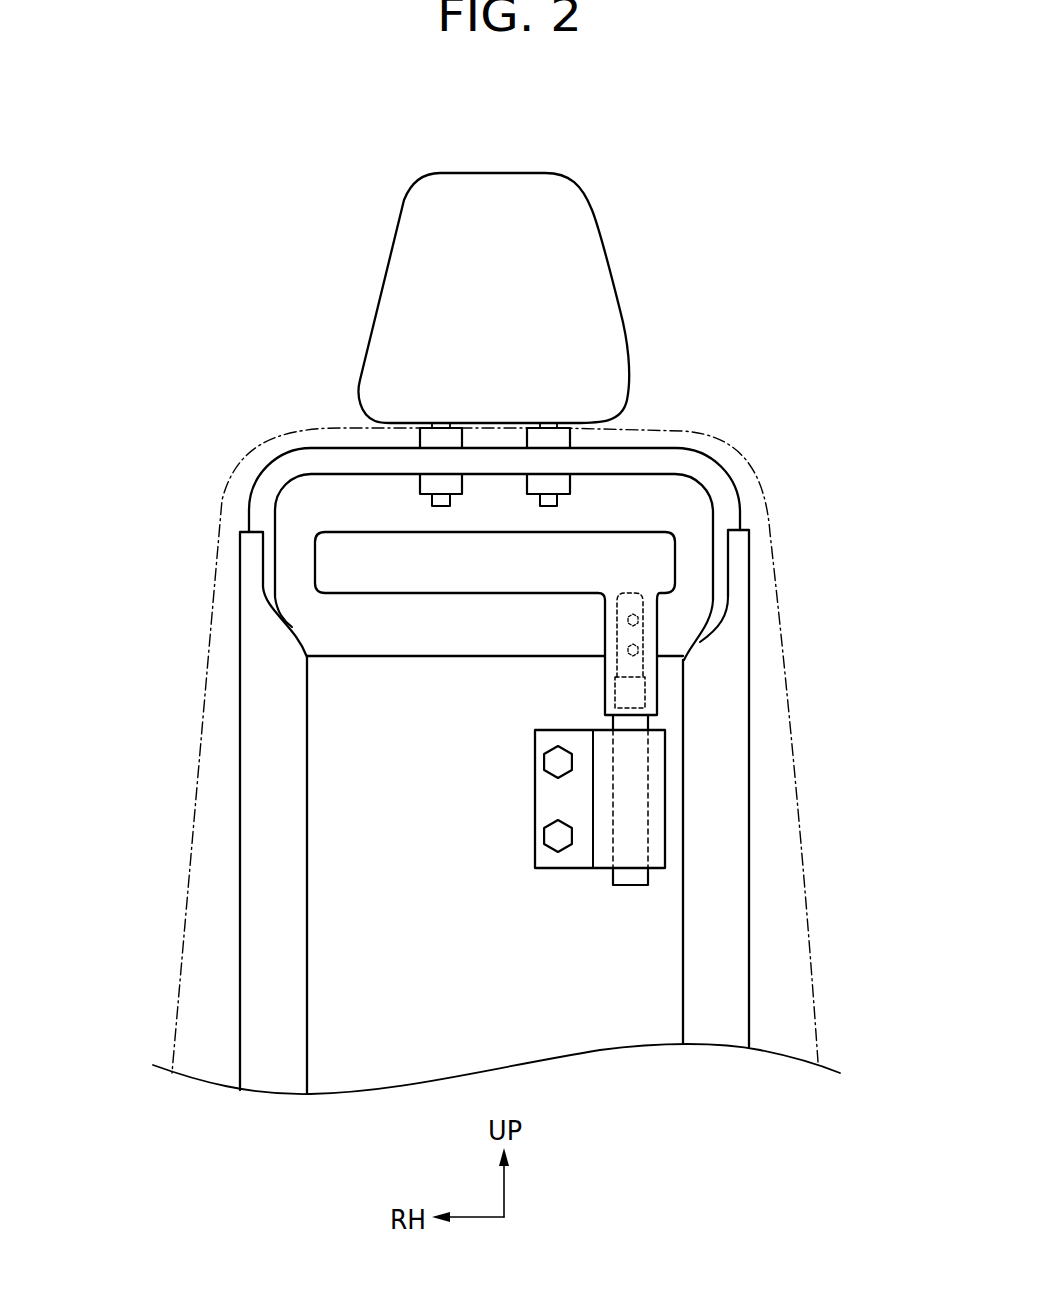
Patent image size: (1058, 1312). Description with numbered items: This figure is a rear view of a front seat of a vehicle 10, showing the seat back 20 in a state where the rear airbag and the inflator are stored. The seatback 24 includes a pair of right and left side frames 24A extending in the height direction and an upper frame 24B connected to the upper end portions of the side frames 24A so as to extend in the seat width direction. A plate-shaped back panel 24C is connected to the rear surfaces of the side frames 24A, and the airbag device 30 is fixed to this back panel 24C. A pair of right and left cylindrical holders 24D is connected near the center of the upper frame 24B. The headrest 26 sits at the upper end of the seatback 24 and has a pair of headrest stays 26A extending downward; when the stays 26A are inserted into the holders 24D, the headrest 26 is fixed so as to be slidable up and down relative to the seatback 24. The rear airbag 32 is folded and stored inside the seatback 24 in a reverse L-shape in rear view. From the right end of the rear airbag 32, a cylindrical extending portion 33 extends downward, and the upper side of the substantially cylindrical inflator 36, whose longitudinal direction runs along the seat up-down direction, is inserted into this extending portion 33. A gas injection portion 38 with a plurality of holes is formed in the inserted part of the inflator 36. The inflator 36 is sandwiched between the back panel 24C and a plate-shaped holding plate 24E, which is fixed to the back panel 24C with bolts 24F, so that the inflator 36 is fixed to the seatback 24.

The vehicle seat 10 is at (823, 287).
The seat back 20 is at (717, 315).
The seatback 24 is at (773, 655).
The side frames 24A is at (723, 953).
The upper frame 24B is at (690, 463).
The back panel 24C is at (343, 727).
The holders 24D is at (410, 440).
The holding plate 24E is at (540, 800).
The bolts 24F is at (550, 842).
The headrest 26 is at (577, 260).
The headrest stays 26A is at (435, 503).
The airbag device 30 is at (566, 541).
The rear airbag 32 is at (600, 548).
The extending portion 33 is at (660, 632).
The inflator 36 is at (637, 723).
The gas injection portion 38 is at (634, 622).